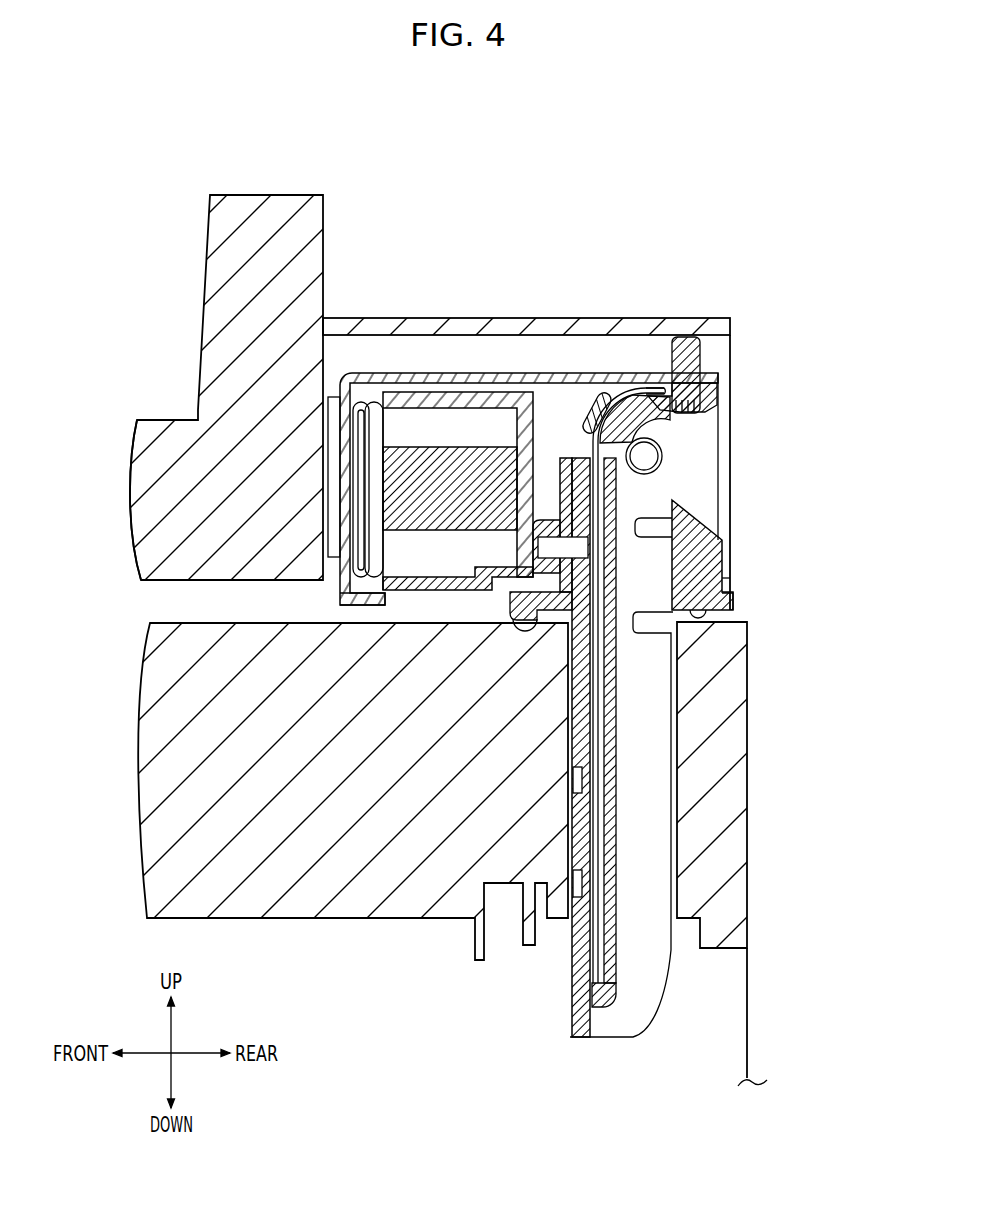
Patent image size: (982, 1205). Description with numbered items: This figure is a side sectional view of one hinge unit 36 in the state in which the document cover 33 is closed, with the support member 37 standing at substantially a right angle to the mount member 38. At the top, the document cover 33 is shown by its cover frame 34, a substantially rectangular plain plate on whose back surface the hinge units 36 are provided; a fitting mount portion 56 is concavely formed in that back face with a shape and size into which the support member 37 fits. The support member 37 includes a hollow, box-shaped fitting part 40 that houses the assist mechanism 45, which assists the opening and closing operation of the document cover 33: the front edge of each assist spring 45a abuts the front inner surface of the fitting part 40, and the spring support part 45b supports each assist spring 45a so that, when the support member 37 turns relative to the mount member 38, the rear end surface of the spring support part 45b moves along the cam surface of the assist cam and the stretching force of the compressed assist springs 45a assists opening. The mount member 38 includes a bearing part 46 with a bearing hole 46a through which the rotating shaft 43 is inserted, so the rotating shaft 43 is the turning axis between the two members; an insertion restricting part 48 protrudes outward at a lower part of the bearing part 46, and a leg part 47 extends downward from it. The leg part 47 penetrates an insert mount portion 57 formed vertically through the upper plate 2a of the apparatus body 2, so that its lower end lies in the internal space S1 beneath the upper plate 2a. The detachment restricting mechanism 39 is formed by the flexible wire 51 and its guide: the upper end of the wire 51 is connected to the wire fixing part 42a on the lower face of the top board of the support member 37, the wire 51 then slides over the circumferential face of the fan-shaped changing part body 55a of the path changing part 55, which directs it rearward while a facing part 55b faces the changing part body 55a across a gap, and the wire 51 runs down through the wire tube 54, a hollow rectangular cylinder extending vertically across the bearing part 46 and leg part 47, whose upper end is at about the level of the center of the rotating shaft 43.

The apparatus body 2 is at (750, 1050).
The upper plate 2a is at (135, 718).
The document cover 33 is at (155, 395).
The cover frame 34 is at (128, 482).
The hinge unit 36 is at (768, 512).
The support member 37 is at (722, 452).
The mount member 38 is at (742, 582).
The detachment restricting mechanism 39 is at (629, 785).
The fitting part 40 is at (507, 373).
The wire fixing part 42a is at (700, 347).
The rotating shaft 43 is at (664, 457).
The assist mechanism 45 is at (443, 404).
The assist spring 45a is at (374, 402).
The spring support part 45b is at (445, 392).
The bearing part 46 is at (723, 550).
The bearing hole 46a is at (665, 437).
The leg part 47 is at (662, 680).
The insertion restricting part 48 is at (733, 600).
The wire 51 is at (598, 820).
The wire tube 54 is at (617, 750).
The path changing part 55 is at (636, 336).
The changing part body 55a is at (658, 390).
The facing part 55b is at (597, 400).
The fitting mount portion 56 is at (338, 585).
The insert mount portion 57 is at (660, 922).
The internal space S1 is at (350, 955).